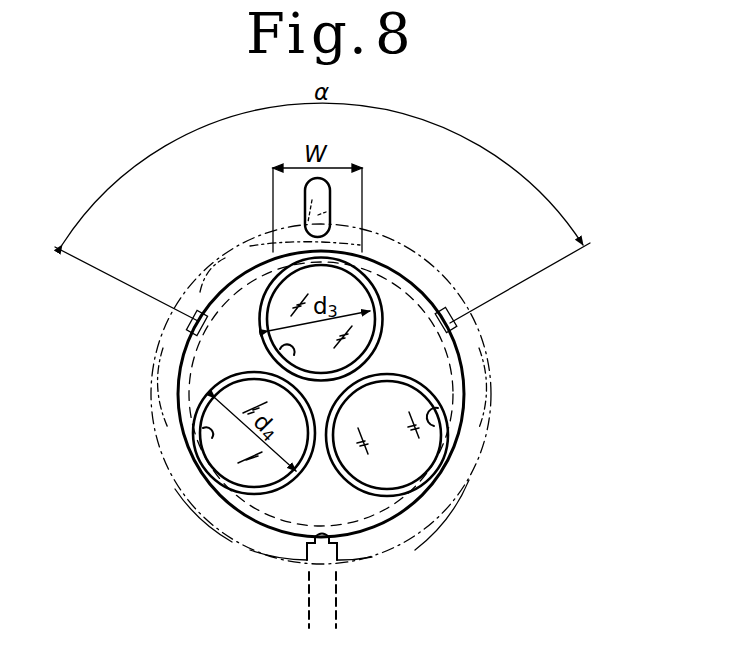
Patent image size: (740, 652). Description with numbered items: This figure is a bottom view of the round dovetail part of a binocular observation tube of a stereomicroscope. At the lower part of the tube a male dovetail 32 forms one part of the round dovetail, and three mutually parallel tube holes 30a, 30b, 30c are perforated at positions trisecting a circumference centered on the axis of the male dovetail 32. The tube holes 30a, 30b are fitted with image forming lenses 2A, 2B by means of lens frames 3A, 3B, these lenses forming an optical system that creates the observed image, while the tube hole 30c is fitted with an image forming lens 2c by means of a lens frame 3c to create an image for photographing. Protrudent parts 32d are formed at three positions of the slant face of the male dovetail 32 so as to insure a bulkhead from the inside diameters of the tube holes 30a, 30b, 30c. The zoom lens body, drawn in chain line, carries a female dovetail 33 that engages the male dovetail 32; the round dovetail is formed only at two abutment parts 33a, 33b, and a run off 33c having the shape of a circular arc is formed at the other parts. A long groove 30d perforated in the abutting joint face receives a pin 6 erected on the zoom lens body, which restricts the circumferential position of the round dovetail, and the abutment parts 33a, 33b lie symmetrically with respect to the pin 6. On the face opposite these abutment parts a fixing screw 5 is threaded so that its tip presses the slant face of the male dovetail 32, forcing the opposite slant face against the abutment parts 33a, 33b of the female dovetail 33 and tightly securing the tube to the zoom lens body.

The image forming lens 2A is at (222, 462).
The image forming lens 2B is at (400, 465).
The image forming lens 2c is at (300, 284).
The lens frame 3A is at (260, 490).
The lens frame 3B is at (437, 462).
The lens frame 3c is at (262, 297).
The fixing screw 5 is at (340, 572).
The pin 6 is at (316, 212).
The tube hole 30a is at (203, 458).
The tube hole 30b is at (466, 460).
The tube hole 30c is at (287, 352).
The long groove 30d is at (325, 195).
The male dovetail 32 is at (418, 264).
The protrudent part 32d is at (365, 255).
The female dovetail 33 is at (456, 306).
The abutment part 33a is at (193, 320).
The abutment part 33b is at (460, 320).
The run off 33c is at (218, 270).